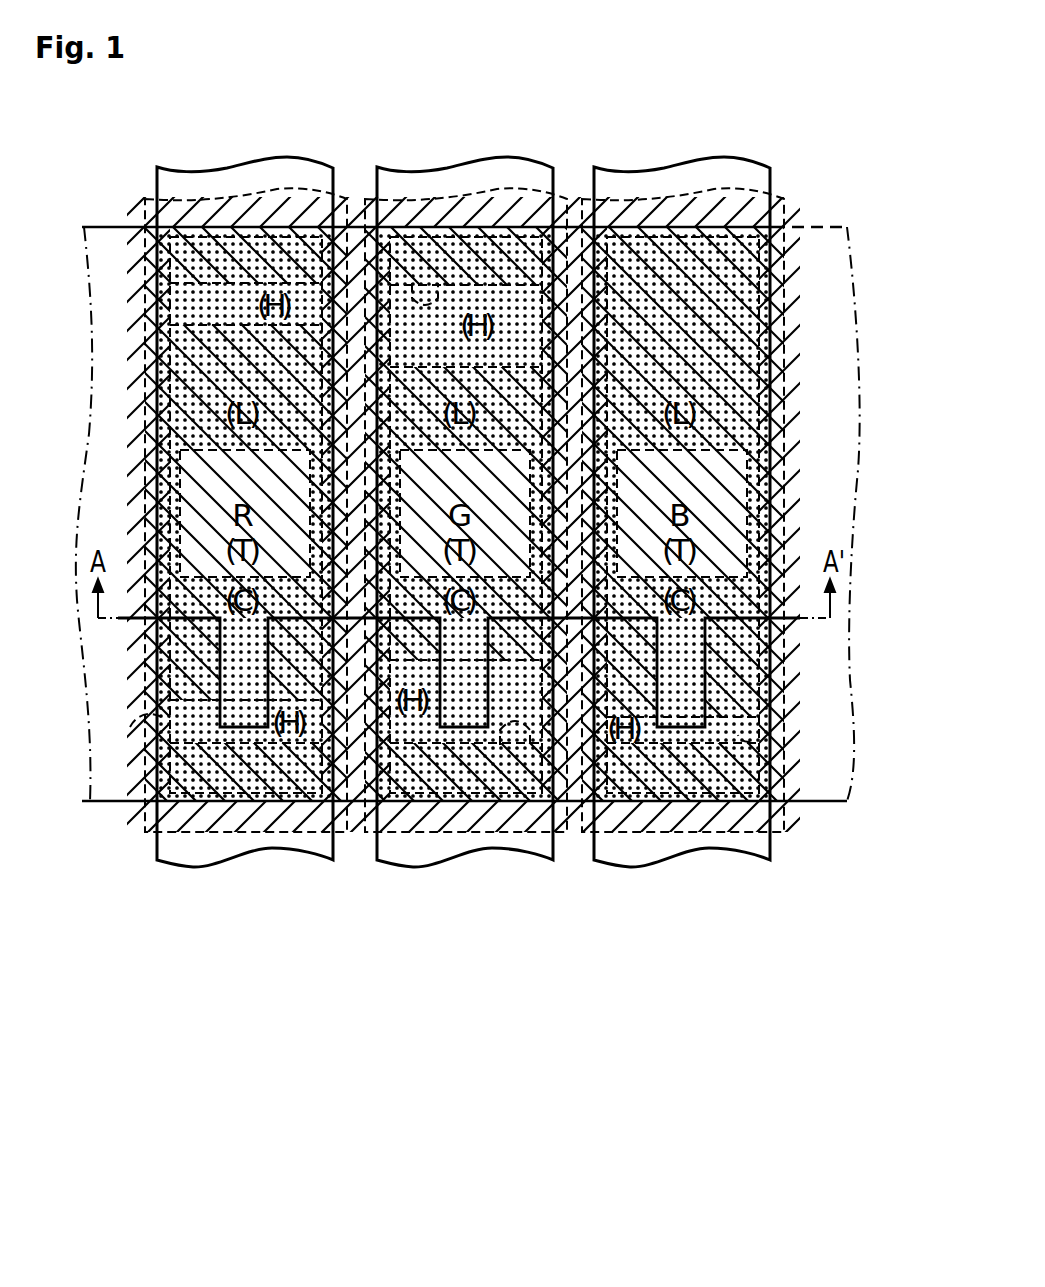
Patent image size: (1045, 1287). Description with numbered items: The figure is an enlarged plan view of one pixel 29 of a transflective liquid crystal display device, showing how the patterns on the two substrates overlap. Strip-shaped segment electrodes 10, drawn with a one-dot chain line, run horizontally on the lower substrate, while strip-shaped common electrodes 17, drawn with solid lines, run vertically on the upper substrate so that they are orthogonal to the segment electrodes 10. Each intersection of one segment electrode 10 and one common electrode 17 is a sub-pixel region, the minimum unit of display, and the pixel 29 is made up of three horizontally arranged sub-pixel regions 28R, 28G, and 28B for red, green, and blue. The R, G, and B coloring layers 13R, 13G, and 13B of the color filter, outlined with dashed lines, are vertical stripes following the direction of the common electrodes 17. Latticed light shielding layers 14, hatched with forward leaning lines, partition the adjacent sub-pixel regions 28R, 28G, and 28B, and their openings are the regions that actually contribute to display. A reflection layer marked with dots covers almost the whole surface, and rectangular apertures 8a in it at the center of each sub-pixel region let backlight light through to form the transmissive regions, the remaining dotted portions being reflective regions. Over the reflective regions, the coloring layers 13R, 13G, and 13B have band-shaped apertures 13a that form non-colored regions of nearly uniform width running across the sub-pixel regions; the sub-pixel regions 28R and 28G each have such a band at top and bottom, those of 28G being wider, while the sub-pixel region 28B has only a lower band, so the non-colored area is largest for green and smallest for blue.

The segment electrode 10 is at (847, 252).
The light shielding layer 14 is at (508, 228).
The common electrode 17 is at (246, 178).
The R coloring layer 13R is at (197, 835).
The G coloring layer 13G is at (417, 835).
The B coloring layer 13B is at (640, 835).
The aperture 13a is at (150, 300).
The aperture 8a is at (748, 456).
The R sub-pixel region 28R is at (258, 822).
The G sub-pixel region 28G is at (495, 822).
The B sub-pixel region 28B is at (263, 1057).
The pixel 29 is at (522, 626).